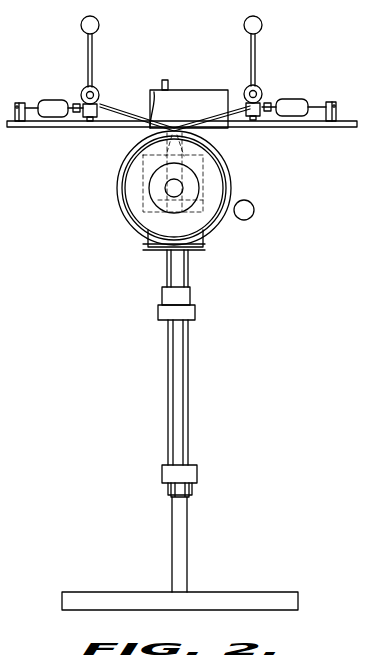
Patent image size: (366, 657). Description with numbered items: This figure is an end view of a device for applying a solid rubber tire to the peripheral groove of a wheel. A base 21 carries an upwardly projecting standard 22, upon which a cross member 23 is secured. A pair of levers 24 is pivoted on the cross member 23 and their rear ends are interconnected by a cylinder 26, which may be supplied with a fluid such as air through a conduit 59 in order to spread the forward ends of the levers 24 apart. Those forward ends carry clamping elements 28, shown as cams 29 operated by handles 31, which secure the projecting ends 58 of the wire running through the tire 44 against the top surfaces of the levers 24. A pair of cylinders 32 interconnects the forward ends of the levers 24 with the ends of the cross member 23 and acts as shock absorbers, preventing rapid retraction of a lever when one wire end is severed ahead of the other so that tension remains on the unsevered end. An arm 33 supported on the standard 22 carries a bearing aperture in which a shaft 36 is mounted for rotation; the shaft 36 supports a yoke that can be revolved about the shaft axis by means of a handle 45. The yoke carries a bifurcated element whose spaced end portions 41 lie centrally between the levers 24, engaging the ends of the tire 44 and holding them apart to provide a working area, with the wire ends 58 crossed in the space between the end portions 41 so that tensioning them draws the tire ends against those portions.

The base 21 is at (226, 598).
The standard 22 is at (172, 548).
The cross member 23 is at (318, 128).
The levers 24 is at (90, 121).
The cylinder 26 is at (152, 90).
The clamping elements 28 is at (82, 65).
The cams 29 is at (98, 91).
The handles 31 is at (81, 24).
The cylinders 32 is at (40, 103).
The arm 33 is at (198, 471).
The shaft 36 is at (180, 356).
The end portions 41 is at (178, 93).
The tire 44 is at (231, 176).
The handle 45 is at (252, 202).
The projecting ends of the wire 58 is at (126, 106).
The conduit 59 is at (166, 80).